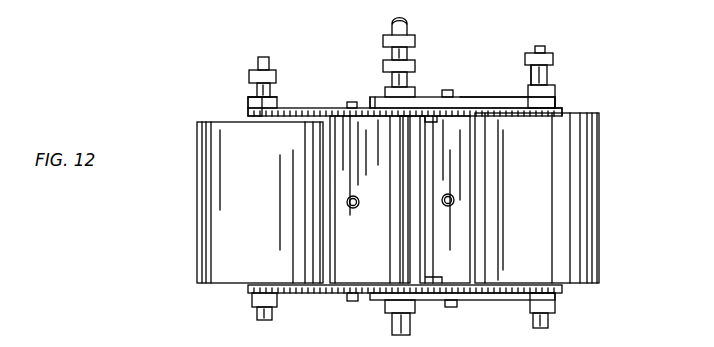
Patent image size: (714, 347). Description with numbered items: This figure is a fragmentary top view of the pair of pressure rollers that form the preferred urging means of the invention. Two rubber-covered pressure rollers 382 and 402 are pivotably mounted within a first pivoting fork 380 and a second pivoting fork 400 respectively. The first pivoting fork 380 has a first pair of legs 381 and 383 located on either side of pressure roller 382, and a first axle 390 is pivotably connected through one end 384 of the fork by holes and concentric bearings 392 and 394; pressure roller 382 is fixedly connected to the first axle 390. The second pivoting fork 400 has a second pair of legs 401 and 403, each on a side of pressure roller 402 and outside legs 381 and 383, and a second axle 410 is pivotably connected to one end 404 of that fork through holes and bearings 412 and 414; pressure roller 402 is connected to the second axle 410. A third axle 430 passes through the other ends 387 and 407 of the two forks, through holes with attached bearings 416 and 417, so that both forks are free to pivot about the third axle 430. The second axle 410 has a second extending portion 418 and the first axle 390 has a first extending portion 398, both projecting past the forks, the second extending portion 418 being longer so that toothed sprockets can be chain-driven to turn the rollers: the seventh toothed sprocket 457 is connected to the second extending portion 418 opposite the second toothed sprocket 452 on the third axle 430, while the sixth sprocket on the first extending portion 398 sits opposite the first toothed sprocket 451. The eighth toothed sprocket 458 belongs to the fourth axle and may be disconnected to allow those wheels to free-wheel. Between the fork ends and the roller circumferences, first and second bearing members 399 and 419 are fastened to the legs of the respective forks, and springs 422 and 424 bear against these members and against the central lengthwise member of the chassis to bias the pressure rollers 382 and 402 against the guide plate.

The first pivoting fork 380 is at (318, 103).
The first leg of first pivoting fork 381 is at (333, 108).
The pressure roller 382 is at (222, 222).
The second leg of first pivoting fork 383 is at (333, 288).
The one end of first pivoting fork 384 is at (242, 112).
The other end of first pivoting fork 387 is at (420, 92).
The first axle 390 is at (246, 96).
The bearing 392 is at (250, 90).
The bearing 394 is at (252, 305).
The first extending portion 398 is at (257, 88).
The first bearing member 399 is at (338, 172).
The second pivoting fork 400 is at (487, 97).
The first leg of second pivoting fork 401 is at (458, 98).
The pressure roller 402 is at (577, 175).
The second leg of second pivoting fork 403 is at (480, 307).
The one end of second pivoting fork 404 is at (562, 98).
The other end of second pivoting fork 407 is at (415, 119).
The second axle 410 is at (526, 81).
The bearing 412 is at (556, 86).
The bearing 414 is at (543, 306).
The bearing 416 is at (383, 88).
The bearing 417 is at (416, 309).
The second extending portion 418 is at (546, 70).
The second bearing member 419 is at (457, 233).
The spring 422 is at (353, 208).
The spring 424 is at (459, 195).
The third axle 430 is at (402, 273).
The first toothed sprocket 451 is at (413, 62).
The second toothed sprocket 452 is at (408, 38).
The seventh toothed sprocket 457 is at (549, 53).
The eighth toothed sprocket 458 is at (268, 70).